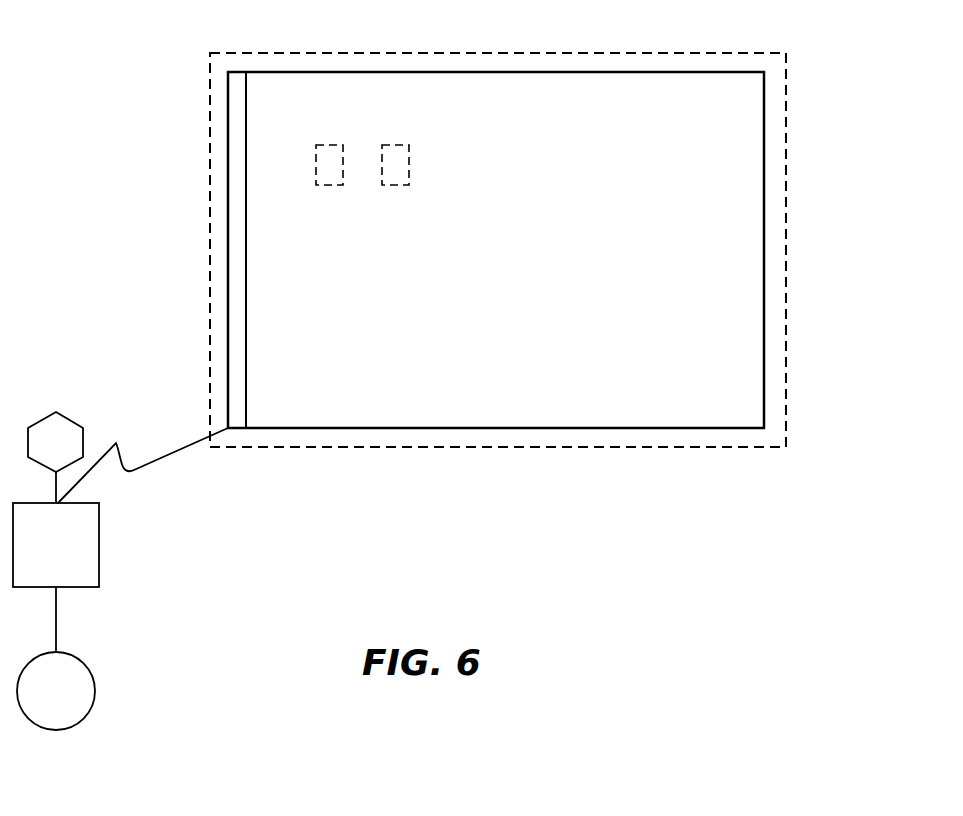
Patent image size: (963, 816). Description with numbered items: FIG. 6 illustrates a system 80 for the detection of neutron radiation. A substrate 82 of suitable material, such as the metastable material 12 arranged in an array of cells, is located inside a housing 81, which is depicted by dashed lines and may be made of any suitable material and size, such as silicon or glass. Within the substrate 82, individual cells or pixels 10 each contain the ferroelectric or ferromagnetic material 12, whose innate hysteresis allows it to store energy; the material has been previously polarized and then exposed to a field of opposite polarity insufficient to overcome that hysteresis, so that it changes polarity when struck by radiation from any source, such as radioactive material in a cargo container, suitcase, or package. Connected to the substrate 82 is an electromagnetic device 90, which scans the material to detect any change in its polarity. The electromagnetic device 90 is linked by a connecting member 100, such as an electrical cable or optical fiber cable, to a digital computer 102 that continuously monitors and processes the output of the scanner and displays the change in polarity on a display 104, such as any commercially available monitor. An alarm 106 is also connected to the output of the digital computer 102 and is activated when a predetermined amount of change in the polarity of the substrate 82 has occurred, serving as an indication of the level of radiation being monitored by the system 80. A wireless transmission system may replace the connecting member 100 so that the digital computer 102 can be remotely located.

The single cell or pixel 10 is at (392, 168).
The metastable material 12 is at (333, 163).
The system 80 is at (810, 102).
The housing 81 is at (787, 72).
The substrate 82 is at (588, 286).
The electromagnetic device 90 is at (237, 87).
The connecting member 100 is at (117, 441).
The digital computer 102 is at (78, 560).
The display 104 is at (78, 706).
The alarm 106 is at (78, 456).